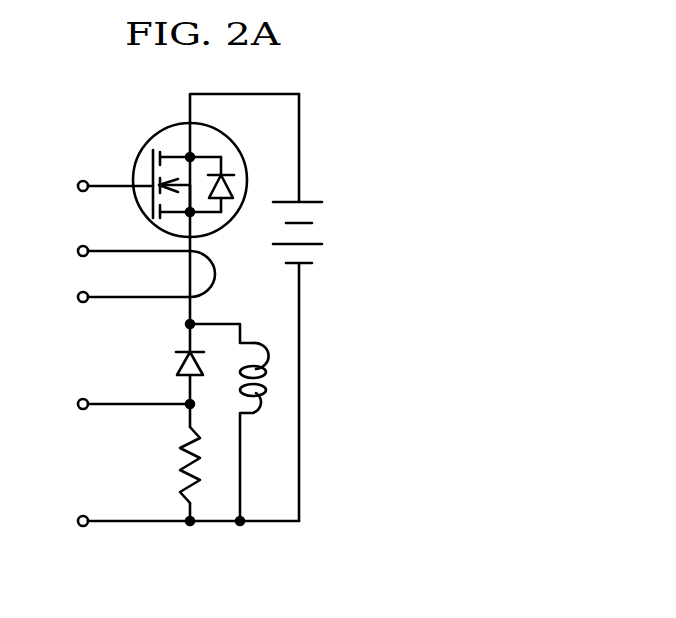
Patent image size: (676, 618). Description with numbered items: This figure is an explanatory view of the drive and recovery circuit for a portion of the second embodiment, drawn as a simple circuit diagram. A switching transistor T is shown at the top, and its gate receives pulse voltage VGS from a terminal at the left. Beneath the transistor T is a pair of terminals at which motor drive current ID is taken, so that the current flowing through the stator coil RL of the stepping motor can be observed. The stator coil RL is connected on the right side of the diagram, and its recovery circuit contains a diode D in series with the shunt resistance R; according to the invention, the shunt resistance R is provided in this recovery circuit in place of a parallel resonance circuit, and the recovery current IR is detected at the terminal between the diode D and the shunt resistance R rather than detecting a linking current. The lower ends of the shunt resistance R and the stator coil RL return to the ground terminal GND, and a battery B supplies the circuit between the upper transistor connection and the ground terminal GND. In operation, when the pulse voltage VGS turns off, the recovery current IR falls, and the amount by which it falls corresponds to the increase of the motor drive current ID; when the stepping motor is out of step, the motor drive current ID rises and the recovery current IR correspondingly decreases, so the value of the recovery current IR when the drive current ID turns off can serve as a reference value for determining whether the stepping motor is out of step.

The power MOSFET transistor T is at (157, 130).
The pulse voltage VGS is at (78, 187).
The motor drive current ID is at (111, 274).
The diode D is at (178, 367).
The recovery current IR is at (100, 407).
The shunt resistance R is at (180, 470).
The ground terminal GND is at (150, 522).
The stator coil RL is at (257, 345).
The battery B is at (313, 245).